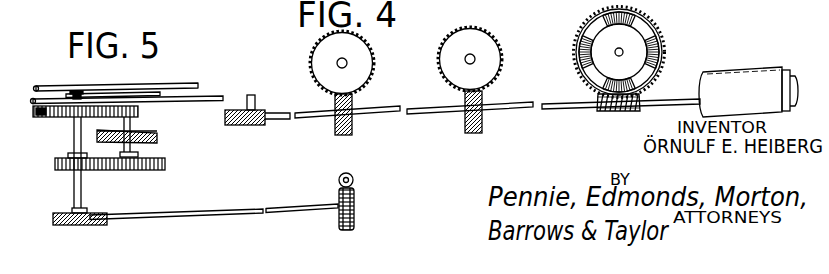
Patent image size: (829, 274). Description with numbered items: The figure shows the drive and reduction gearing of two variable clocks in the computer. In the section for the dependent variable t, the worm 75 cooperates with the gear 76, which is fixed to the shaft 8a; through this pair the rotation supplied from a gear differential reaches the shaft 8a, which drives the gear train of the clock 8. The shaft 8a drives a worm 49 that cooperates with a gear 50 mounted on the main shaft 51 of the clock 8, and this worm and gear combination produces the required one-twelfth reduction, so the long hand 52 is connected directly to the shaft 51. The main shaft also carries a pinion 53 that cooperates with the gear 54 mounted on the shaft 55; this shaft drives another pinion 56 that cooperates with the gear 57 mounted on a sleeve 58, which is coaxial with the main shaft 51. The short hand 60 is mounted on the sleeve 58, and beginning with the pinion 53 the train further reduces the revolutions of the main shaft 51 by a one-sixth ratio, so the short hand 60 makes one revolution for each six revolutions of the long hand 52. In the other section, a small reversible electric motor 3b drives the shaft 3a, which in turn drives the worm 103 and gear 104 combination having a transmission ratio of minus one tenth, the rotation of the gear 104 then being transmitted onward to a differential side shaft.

In FIG. 4, the shaft 3a is at (278, 113).
In FIG. 4, the electric motor 3b is at (755, 72).
In FIG. 4, the worm 103 is at (611, 111).
In FIG. 4, the gear 104 is at (654, 24).
In FIG. 5, the clock 8 is at (207, 96).
In FIG. 5, the shaft 8a is at (242, 212).
In FIG. 5, the worm 49 is at (80, 226).
In FIG. 5, the gear 50 is at (100, 215).
In FIG. 5, the main shaft 51 is at (79, 192).
In FIG. 5, the long hand 52 is at (163, 85).
In FIG. 5, the pinion 53 is at (75, 170).
In FIG. 5, the gear 54 is at (163, 167).
In FIG. 5, the shaft 55 is at (155, 143).
In FIG. 5, the pinion 56 is at (139, 111).
In FIG. 5, the gear 57 is at (68, 111).
In FIG. 5, the sleeve 58 is at (81, 98).
In FIG. 5, the short hand 60 is at (128, 94).
In FIG. 5, the worm 75 is at (353, 179).
In FIG. 5, the gear 76 is at (356, 218).